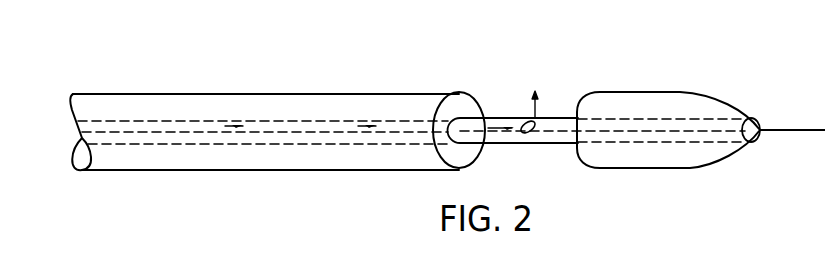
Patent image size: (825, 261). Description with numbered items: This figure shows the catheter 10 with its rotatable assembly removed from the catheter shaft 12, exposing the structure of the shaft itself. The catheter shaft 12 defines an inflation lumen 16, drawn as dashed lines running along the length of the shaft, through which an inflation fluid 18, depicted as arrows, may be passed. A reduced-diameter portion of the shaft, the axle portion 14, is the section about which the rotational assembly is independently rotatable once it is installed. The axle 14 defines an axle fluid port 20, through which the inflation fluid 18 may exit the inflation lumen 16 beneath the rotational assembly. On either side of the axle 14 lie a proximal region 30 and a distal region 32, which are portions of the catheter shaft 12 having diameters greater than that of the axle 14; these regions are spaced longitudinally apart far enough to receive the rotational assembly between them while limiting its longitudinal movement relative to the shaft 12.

The catheter 10 is at (177, 79).
The catheter shaft 12 is at (501, 114).
The axle portion 14 is at (553, 118).
The inflation lumen 16 is at (268, 144).
The inflation fluid 18 is at (208, 122).
The axle fluid port 20 is at (527, 140).
The proximal region 30 is at (358, 170).
The distal region 32 is at (681, 92).